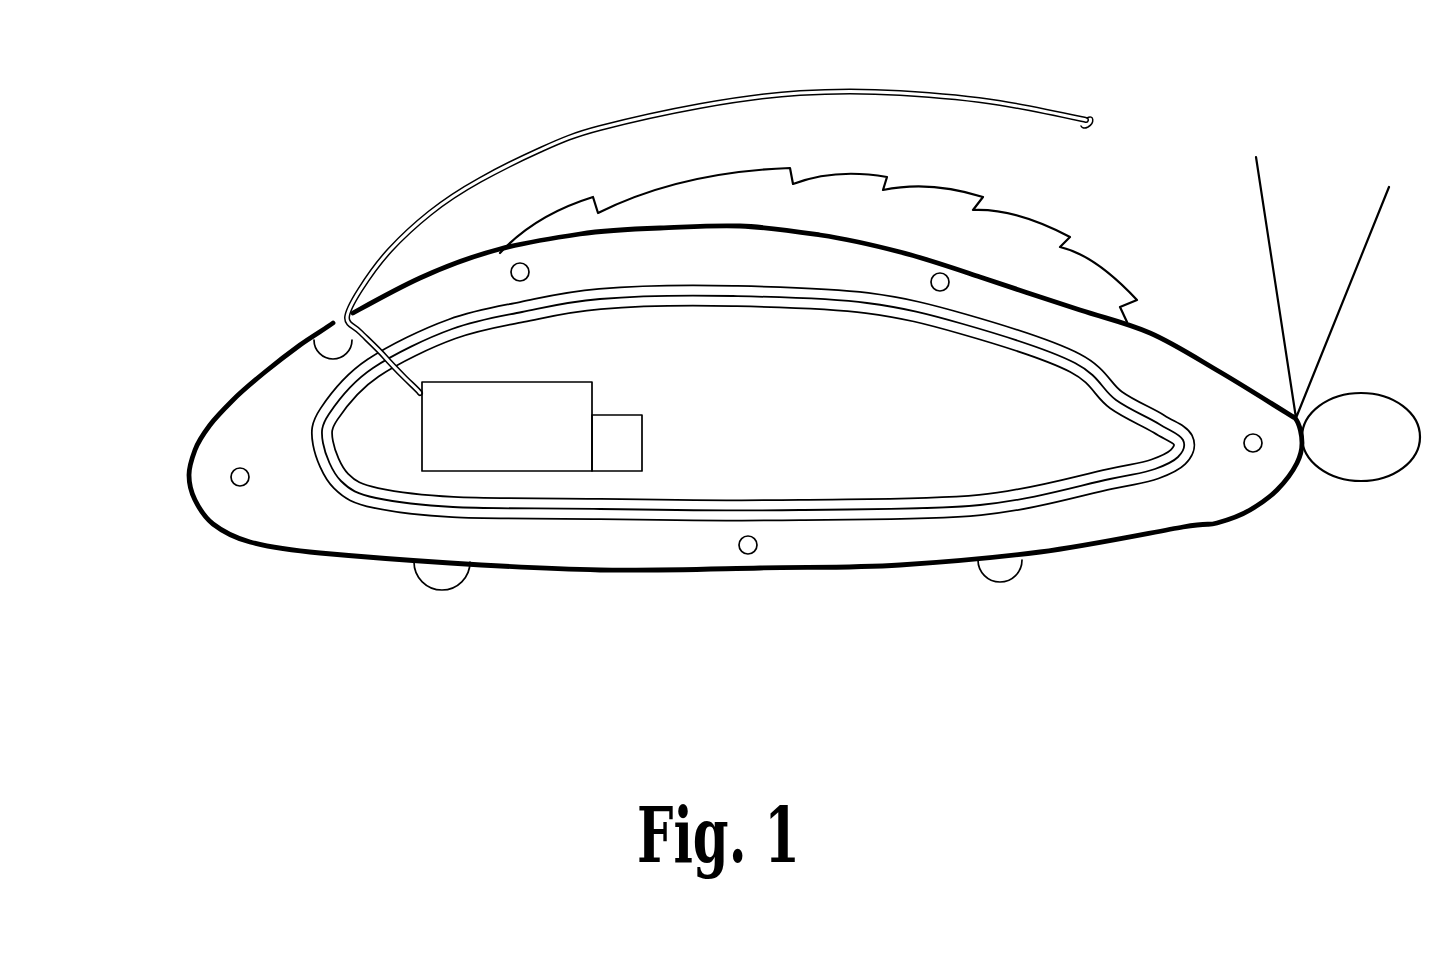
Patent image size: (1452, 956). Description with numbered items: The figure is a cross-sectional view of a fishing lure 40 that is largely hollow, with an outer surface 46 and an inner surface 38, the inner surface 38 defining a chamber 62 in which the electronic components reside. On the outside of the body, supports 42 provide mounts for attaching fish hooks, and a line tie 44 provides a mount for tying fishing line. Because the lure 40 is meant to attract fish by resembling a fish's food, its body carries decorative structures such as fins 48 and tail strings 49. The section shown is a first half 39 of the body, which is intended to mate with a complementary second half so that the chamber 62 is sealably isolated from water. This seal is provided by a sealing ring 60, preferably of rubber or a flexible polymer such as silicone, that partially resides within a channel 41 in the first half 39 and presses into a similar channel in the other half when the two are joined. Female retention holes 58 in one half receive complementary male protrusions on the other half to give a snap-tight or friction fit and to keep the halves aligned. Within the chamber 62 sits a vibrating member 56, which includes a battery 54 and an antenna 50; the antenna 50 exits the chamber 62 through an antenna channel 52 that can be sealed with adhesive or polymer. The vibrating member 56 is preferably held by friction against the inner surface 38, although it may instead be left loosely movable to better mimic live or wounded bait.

The inner surface 38 is at (880, 493).
The first half 39 is at (1097, 532).
The fishing lure 40 is at (190, 655).
The channel 41 is at (828, 519).
The supports 42 is at (435, 587).
The line tie 44 is at (1377, 482).
The outer surface 46 is at (613, 573).
The fins 48 is at (928, 187).
The tail strings 49 is at (1385, 200).
The antenna 50 is at (672, 110).
The antenna channel 52 is at (335, 356).
The battery 54 is at (632, 428).
The vibrating member 56 is at (560, 387).
The female retention holes 58 is at (512, 265).
The sealing ring 60 is at (1145, 490).
The chamber 62 is at (855, 402).